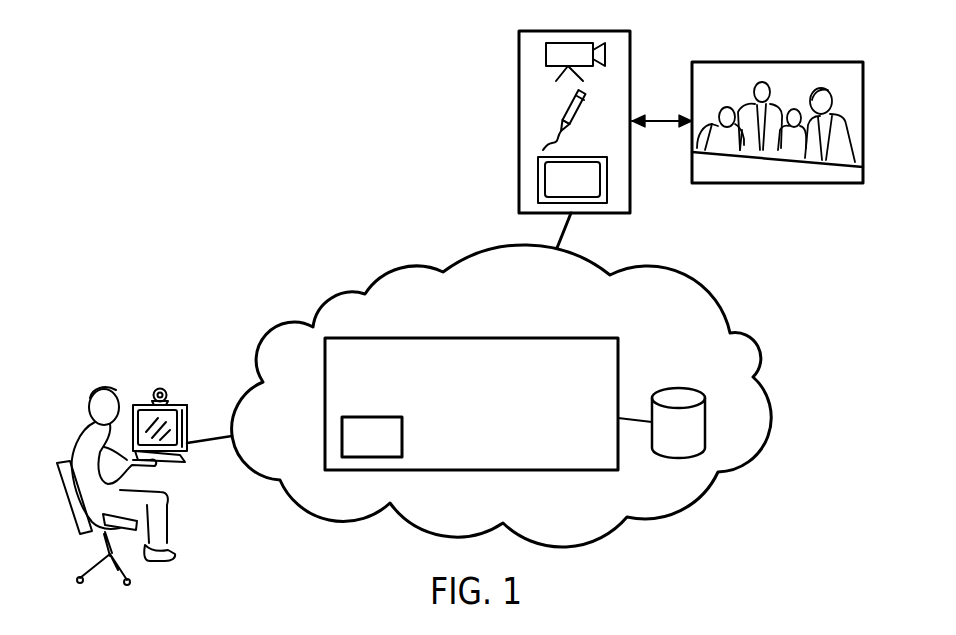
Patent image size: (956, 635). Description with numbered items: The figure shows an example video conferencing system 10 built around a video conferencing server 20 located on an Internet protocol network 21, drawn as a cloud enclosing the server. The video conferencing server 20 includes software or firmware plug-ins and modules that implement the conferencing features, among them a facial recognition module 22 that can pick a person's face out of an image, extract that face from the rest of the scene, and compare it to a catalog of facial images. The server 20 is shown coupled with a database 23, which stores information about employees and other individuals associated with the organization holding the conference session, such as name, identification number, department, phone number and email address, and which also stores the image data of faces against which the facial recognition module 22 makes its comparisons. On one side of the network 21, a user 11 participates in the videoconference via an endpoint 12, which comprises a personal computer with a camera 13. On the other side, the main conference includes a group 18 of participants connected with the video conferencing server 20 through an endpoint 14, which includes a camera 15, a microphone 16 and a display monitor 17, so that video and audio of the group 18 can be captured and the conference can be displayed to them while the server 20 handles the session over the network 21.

The video conferencing system 10 is at (232, 194).
The user 11 is at (80, 425).
The endpoint 12 is at (140, 402).
The camera 13 is at (160, 388).
The endpoint 14 is at (519, 122).
The camera 15 is at (547, 51).
The microphone 16 is at (581, 114).
The display monitor 17 is at (538, 181).
The group 18 is at (777, 184).
The video conferencing server 20 is at (468, 471).
The Internet protocol (IP) network 21 is at (505, 309).
The facial recognition (FR) module 22 is at (342, 439).
The database 23 is at (679, 386).